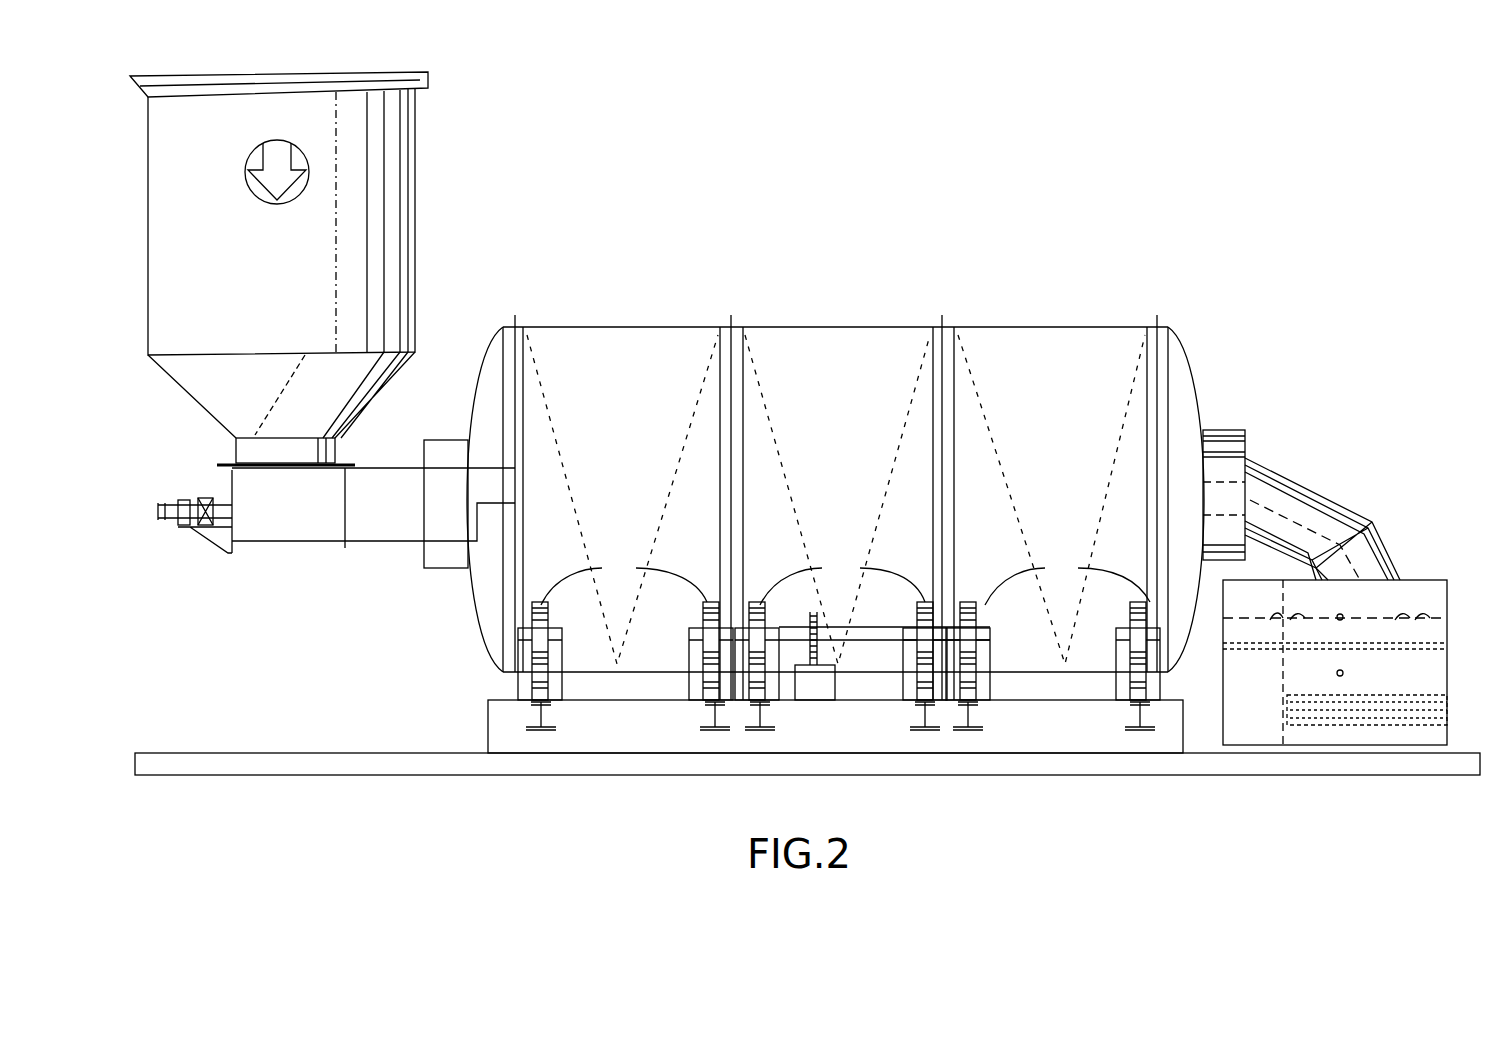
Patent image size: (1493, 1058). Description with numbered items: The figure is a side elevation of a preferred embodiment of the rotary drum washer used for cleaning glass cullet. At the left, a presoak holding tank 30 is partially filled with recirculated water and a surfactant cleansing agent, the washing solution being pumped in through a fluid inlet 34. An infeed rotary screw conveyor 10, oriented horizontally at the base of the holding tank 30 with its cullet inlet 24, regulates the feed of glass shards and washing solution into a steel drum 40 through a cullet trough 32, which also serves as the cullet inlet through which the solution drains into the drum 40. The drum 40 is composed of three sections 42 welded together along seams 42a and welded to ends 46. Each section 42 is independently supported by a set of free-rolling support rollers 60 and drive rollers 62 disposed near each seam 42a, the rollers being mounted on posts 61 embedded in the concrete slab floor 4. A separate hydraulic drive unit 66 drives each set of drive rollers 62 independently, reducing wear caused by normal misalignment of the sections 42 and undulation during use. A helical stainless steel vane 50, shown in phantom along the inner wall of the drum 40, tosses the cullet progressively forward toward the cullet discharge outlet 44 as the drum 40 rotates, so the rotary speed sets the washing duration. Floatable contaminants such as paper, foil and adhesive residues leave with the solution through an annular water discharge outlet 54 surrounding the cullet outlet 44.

The concrete slab floor 4 is at (797, 738).
The infeed rotary screw conveyor 10 is at (398, 477).
The cullet inlet 24 is at (1387, 610).
The presoak holding tank 30 is at (400, 278).
The cullet trough 32 is at (422, 535).
The fluid inlet 34 is at (222, 528).
The drum 40 is at (1018, 318).
The drum sections 42 is at (632, 446).
The seams 42a is at (733, 383).
The cullet discharge outlet 44 is at (1335, 518).
The ends 46 is at (498, 400).
The helical vane 50 is at (690, 418).
The annular water discharge outlet 54 is at (1248, 445).
The support rollers 60 is at (845, 579).
The posts 61 is at (697, 688).
The drive rollers 62 is at (842, 579).
The hydraulic drive unit 66 is at (823, 690).